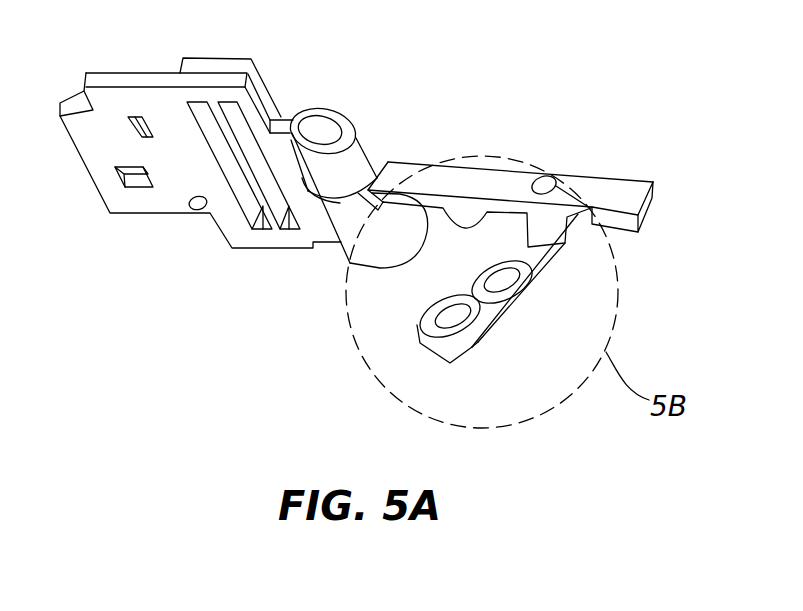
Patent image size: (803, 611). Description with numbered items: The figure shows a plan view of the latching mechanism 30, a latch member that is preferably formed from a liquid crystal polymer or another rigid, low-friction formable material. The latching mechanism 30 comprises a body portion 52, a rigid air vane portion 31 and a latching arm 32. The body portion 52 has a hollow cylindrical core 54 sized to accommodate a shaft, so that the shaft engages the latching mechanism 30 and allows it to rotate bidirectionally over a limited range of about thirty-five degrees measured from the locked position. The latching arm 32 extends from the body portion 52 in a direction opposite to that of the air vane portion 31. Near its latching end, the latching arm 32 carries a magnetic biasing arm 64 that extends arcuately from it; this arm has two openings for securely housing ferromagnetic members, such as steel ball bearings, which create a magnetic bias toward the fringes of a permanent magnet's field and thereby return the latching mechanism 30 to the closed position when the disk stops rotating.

The latching mechanism 30 is at (262, 284).
The rigid air vane portion 31 is at (112, 112).
The latching arm 32 is at (590, 188).
The body portion 52 is at (358, 157).
The hollow cylindrical core 54 is at (321, 125).
The magnetic biasing arm 64 is at (497, 334).